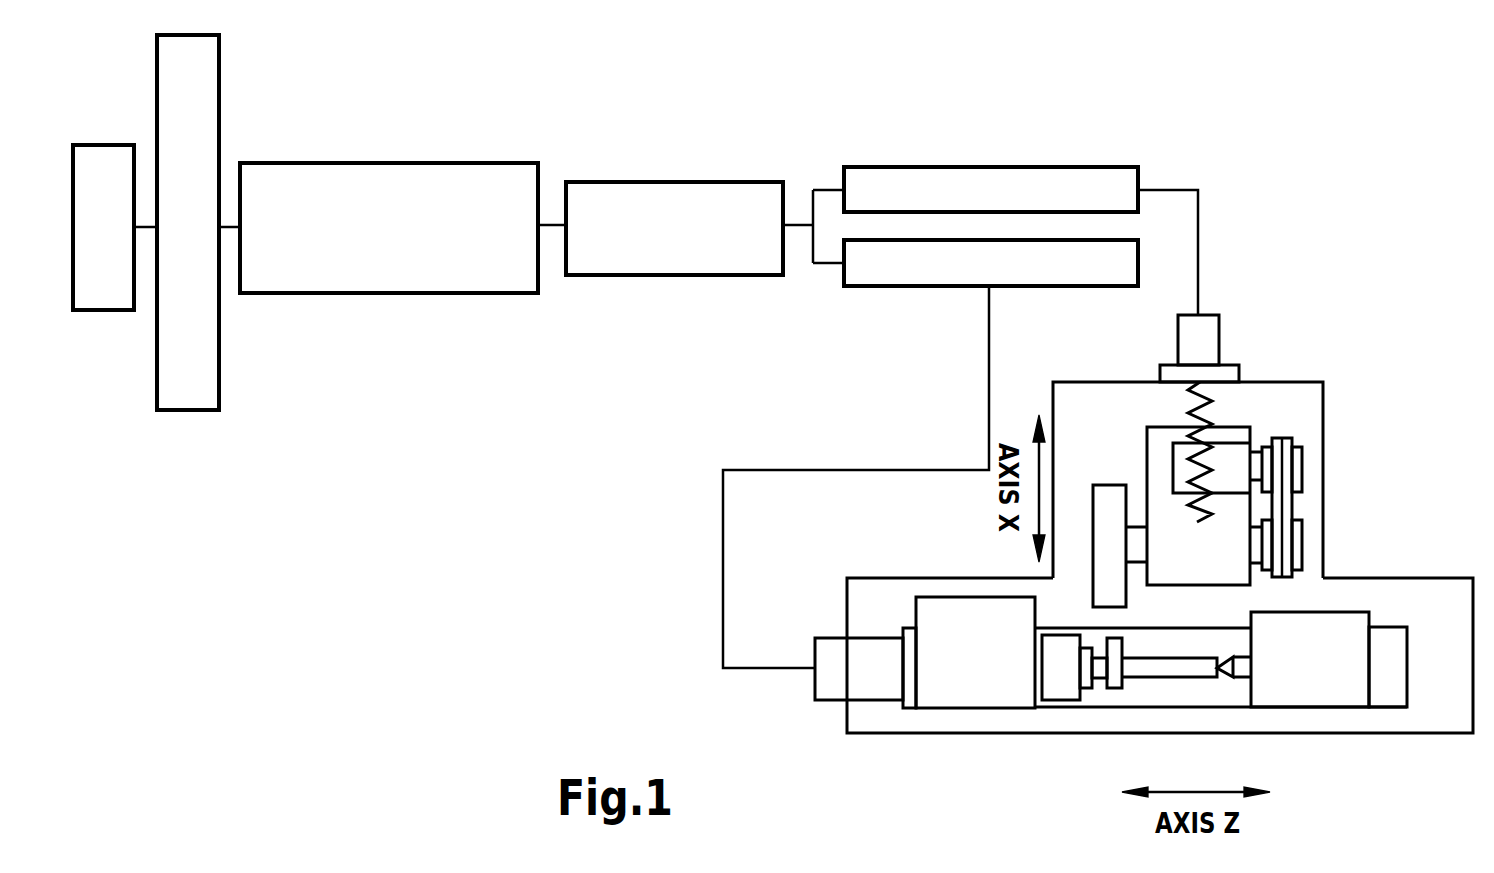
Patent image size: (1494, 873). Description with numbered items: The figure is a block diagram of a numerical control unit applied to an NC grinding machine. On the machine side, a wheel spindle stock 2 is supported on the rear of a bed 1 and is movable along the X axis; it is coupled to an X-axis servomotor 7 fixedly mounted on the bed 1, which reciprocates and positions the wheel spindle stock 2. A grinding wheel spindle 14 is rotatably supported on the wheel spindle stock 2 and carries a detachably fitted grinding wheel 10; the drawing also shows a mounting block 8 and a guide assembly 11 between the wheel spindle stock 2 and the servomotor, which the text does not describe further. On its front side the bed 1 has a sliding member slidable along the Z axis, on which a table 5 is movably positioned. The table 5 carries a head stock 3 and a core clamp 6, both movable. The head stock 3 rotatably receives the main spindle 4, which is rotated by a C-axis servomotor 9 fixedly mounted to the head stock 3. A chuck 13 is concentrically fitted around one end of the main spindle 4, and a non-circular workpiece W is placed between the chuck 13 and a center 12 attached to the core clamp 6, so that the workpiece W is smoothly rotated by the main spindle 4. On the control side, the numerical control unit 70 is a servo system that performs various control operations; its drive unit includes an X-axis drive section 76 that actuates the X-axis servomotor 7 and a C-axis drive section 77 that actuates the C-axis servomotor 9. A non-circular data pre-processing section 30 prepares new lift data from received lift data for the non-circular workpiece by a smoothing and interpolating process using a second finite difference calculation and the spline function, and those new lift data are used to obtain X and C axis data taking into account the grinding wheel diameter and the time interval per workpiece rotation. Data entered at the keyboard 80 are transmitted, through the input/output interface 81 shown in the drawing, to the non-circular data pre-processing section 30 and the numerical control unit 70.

The bed 1 is at (1320, 382).
The wheel spindle stock 2 is at (1240, 568).
The head stock 3 is at (962, 700).
The main spindle 4 is at (1040, 680).
The table 5 is at (1220, 698).
The core clamp 6 is at (1337, 700).
The X-axis servomotor 7 is at (1220, 322).
The spring mount 8 is at (1230, 378).
The C-axis servomotor 9 is at (826, 684).
The grinding wheel 10 is at (1093, 500).
The linear guide 11 is at (1243, 452).
The center 12 is at (1247, 657).
The chuck 13 is at (1070, 695).
The grinding wheel spindle 14 is at (1140, 527).
The non-circular workpiece W is at (1168, 672).
The non-circular data pre-processing section 30 is at (517, 163).
The numerical control unit 70 is at (768, 182).
The X-axis drive section 76 is at (1056, 167).
The C-axis drive section 77 is at (870, 286).
The keyboard 80 is at (118, 145).
The input/output interface 81 is at (219, 70).